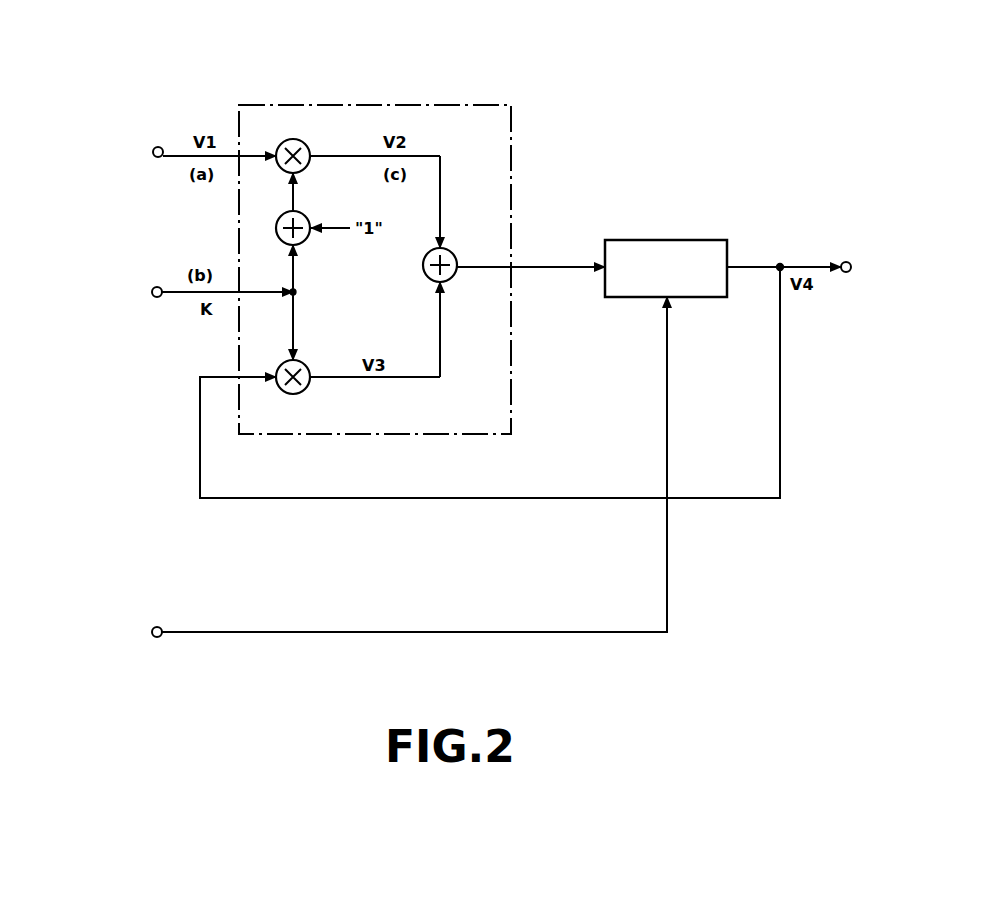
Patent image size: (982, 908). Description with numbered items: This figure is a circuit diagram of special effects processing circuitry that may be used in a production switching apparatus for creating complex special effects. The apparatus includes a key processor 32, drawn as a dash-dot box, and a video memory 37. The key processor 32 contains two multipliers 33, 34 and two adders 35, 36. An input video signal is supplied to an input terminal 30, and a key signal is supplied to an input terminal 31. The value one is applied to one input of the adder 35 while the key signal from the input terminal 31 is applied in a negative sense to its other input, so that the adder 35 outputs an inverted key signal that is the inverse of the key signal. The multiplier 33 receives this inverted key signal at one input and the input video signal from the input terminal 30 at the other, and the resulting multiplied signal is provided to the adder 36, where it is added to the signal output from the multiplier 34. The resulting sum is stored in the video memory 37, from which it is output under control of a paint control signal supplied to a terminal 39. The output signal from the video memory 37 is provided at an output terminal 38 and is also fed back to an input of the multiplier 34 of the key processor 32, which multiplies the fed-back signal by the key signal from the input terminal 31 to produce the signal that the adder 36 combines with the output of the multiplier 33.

The input terminal 30 is at (158, 147).
The input terminal 31 is at (159, 297).
The key processor 32 is at (373, 105).
The multiplier 33 is at (306, 146).
The multiplier 34 is at (306, 367).
The adder 35 is at (306, 240).
The adder 36 is at (450, 252).
The video memory 37 is at (666, 240).
The output terminal 38 is at (845, 262).
The terminal 39 is at (160, 627).